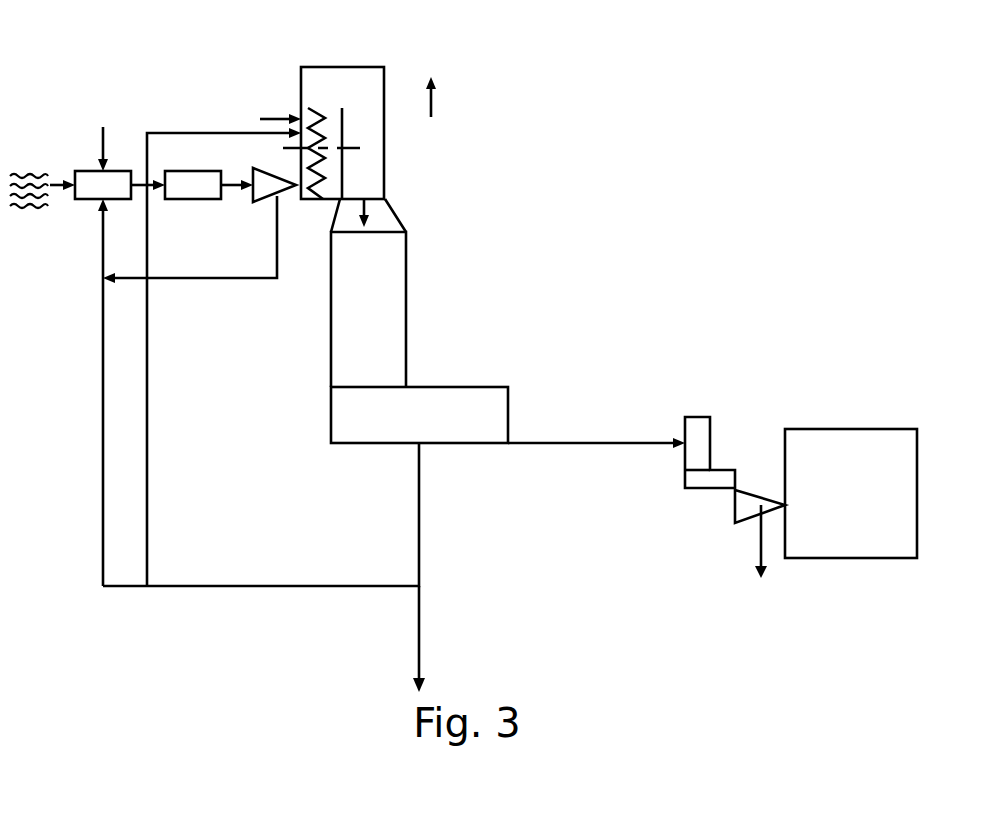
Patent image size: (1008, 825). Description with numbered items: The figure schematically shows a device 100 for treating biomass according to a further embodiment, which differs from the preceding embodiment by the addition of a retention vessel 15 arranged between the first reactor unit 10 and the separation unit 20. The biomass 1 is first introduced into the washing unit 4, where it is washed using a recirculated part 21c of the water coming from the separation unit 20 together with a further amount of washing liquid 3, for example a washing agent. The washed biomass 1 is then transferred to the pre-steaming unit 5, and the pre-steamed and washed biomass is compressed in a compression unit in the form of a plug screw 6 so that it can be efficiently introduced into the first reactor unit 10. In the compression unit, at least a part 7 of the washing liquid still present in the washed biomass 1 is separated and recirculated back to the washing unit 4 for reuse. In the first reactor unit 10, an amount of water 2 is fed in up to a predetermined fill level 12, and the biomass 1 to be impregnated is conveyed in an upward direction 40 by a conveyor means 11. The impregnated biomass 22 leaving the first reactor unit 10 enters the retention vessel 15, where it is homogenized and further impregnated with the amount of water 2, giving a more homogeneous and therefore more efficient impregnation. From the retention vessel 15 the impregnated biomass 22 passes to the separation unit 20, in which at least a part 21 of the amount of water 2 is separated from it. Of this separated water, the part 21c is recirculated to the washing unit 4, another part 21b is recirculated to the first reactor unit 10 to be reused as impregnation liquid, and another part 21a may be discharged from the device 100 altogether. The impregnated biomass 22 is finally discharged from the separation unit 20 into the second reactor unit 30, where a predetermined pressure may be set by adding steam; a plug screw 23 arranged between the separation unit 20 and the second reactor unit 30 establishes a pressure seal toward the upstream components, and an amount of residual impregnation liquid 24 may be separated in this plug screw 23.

The biomass 1 is at (23, 177).
The amount of water 2 is at (282, 112).
The washing liquid 3 is at (103, 130).
The washing unit 4 is at (117, 190).
The pre-steaming unit 5 is at (197, 190).
The plug screw 6 is at (281, 187).
The part of washing liquid 7 is at (243, 280).
The first reactor unit 10 is at (333, 80).
The conveyor means 11 is at (340, 130).
The predetermined fill level 12 is at (283, 148).
The retention vessel 15 is at (383, 267).
The separation unit 20 is at (470, 412).
The part of the amount of water 21 is at (419, 505).
The discharged part of water 21a is at (419, 630).
The recirculated part of water to first reactor unit 21b is at (147, 472).
The recirculated part of water to washing unit 21c is at (103, 468).
The impregnated biomass 22 is at (367, 203).
The plug screw 23 is at (753, 503).
The residual impregnation liquid 24 is at (764, 563).
The second reactor unit 30 is at (830, 447).
The upward direction 40 is at (432, 93).
The device 100 is at (674, 192).